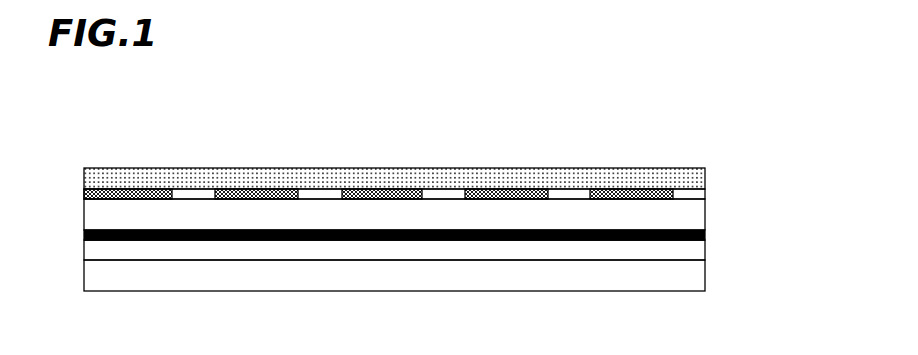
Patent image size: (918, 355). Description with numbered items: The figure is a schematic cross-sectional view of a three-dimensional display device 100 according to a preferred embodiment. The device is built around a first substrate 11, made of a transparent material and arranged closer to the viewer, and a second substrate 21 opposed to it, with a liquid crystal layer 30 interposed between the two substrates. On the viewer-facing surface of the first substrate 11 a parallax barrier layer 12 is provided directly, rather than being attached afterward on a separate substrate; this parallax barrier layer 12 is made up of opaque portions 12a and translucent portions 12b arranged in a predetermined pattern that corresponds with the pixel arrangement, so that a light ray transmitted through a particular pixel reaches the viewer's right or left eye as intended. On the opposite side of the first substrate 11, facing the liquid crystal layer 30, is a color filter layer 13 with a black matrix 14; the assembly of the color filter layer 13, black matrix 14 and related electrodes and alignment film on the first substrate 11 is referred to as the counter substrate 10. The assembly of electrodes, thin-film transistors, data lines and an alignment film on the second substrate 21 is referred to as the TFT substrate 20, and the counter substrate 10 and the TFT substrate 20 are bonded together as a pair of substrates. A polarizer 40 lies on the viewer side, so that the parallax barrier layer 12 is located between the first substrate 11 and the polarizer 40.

The three-dimensional display device 100 is at (436, 169).
The counter substrate 10 is at (436, 213).
The first substrate 11 is at (699, 216).
The parallax barrier layer 12 is at (415, 174).
The opaque portions 12a is at (677, 198).
The translucent portions 12b is at (394, 169).
The color filter layer 13 is at (688, 243).
The black matrix 14 is at (687, 242).
The TFT substrate 20 is at (698, 275).
The second substrate 21 is at (450, 292).
The liquid crystal layer 30 is at (90, 249).
The polarizer 40 is at (93, 178).